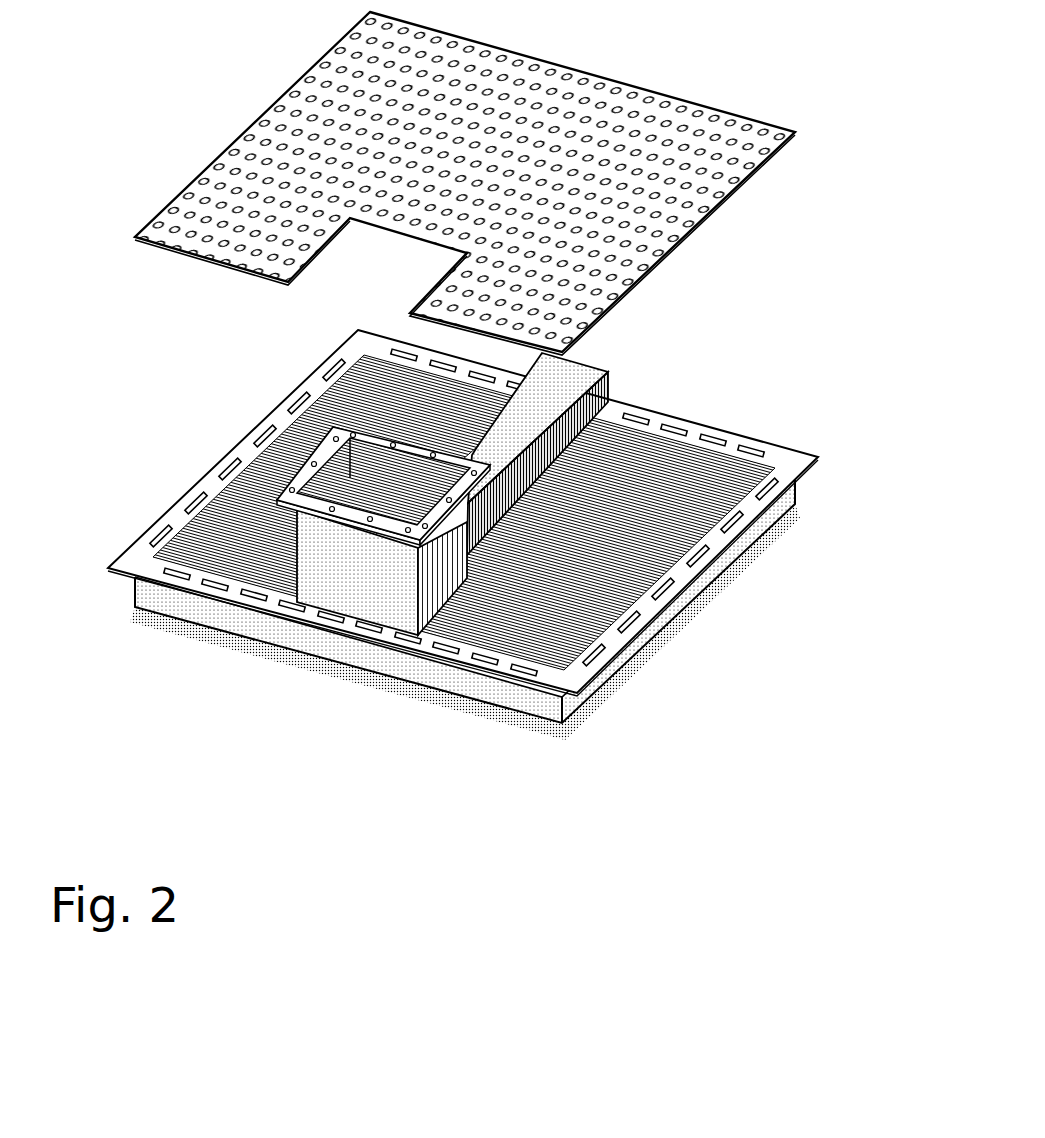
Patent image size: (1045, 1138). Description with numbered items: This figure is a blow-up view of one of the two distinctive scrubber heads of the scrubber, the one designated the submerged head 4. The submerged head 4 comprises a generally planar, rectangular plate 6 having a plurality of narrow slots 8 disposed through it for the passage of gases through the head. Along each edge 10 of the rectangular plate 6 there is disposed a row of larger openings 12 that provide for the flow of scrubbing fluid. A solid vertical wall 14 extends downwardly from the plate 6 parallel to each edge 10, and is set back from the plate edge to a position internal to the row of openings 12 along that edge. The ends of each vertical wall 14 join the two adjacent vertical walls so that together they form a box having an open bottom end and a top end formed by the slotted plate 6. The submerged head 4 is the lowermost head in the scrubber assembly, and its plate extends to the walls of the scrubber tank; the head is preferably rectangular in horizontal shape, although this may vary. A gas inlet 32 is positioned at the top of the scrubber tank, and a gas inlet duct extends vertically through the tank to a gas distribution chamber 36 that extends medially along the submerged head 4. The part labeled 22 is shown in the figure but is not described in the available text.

The submerged head 4 is at (427, 539).
The rectangular plate 6 is at (203, 530).
The narrow slots 8 is at (580, 697).
The edge 10 is at (703, 427).
The larger openings 12 is at (150, 550).
The solid vertical wall 14 is at (145, 594).
The perforated top plate 22 is at (270, 105).
The gas inlet 32 is at (380, 480).
The gas distribution chamber 36 is at (589, 377).